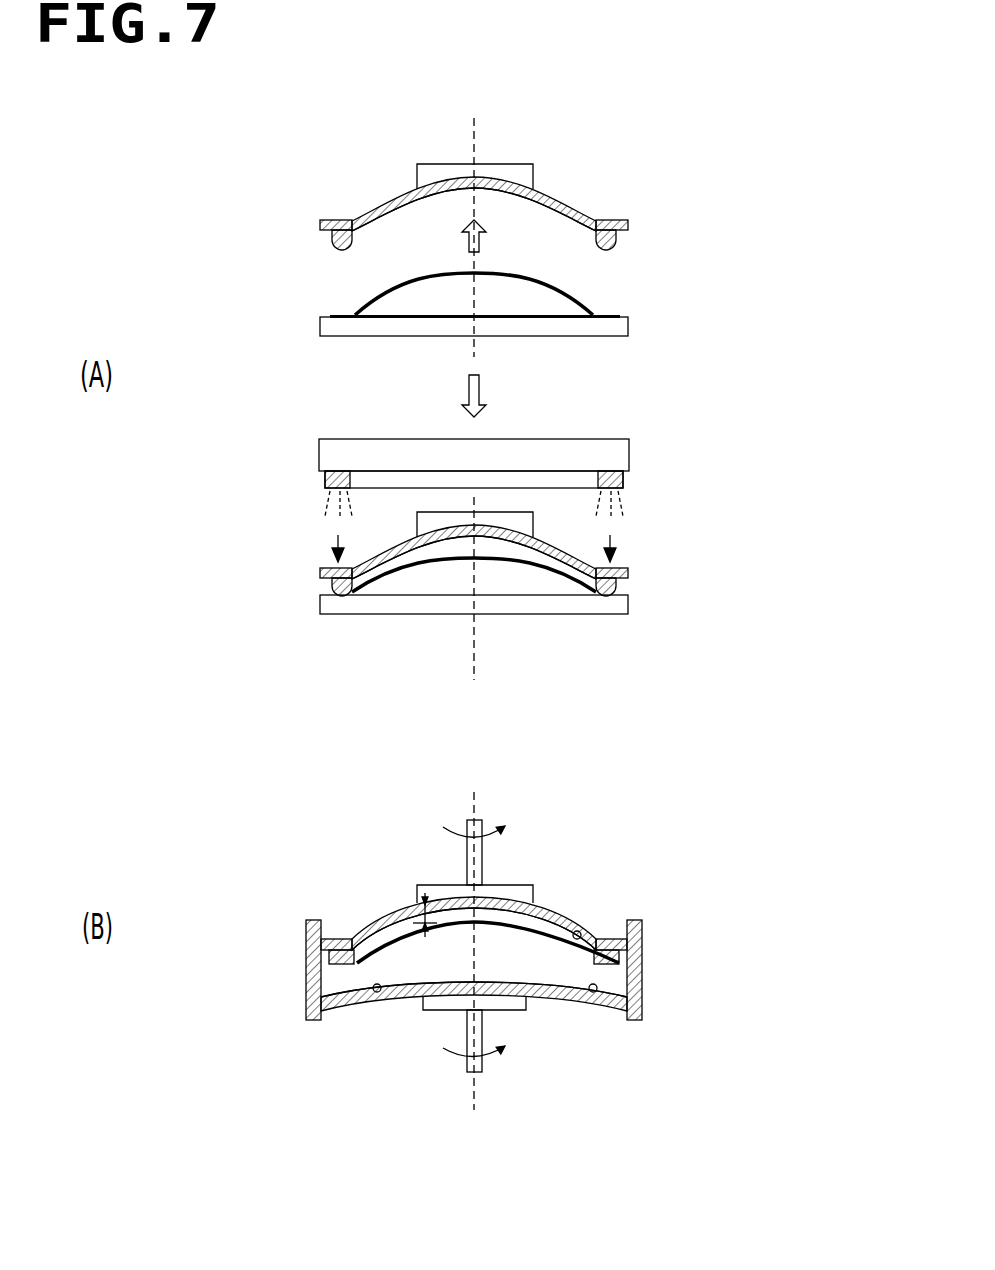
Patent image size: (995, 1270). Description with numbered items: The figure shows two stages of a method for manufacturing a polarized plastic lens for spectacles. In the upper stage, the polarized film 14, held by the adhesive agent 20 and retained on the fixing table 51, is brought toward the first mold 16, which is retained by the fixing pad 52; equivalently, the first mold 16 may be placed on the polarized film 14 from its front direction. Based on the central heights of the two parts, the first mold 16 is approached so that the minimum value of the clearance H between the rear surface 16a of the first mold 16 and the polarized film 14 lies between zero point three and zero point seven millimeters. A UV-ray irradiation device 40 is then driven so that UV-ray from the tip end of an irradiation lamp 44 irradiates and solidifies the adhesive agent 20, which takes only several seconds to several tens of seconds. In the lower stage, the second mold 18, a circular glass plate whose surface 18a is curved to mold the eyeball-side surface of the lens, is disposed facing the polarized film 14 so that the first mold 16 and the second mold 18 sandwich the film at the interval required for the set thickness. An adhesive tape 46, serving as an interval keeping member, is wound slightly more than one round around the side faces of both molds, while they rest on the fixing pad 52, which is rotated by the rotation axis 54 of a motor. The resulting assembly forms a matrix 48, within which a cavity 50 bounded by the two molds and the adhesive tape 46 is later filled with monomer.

The fixing pad 52 is at (524, 177).
The first mold 16 is at (578, 202).
The rear surface of the first mold 16a is at (410, 203).
The adhesive agent 20 is at (332, 240).
The polarized film 14 is at (578, 299).
The fixing table 51 is at (603, 327).
The UV-ray irradiation device 40 is at (623, 455).
The irradiation lamp 44 is at (618, 498).
The adhesive tape 46 is at (305, 995).
The second mold 18 is at (555, 998).
The surface of the second mold 18a is at (368, 1003).
The cavity 50 is at (576, 933).
The rotation axis 54 is at (465, 848).
The matrix 48 is at (318, 897).
The clearance H is at (434, 923).